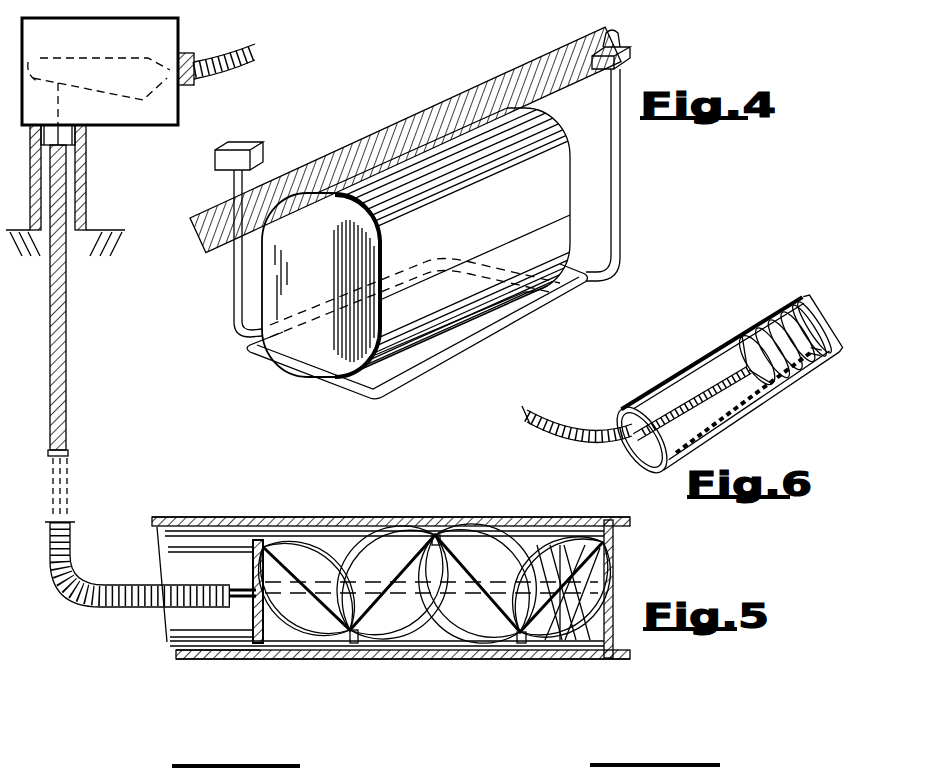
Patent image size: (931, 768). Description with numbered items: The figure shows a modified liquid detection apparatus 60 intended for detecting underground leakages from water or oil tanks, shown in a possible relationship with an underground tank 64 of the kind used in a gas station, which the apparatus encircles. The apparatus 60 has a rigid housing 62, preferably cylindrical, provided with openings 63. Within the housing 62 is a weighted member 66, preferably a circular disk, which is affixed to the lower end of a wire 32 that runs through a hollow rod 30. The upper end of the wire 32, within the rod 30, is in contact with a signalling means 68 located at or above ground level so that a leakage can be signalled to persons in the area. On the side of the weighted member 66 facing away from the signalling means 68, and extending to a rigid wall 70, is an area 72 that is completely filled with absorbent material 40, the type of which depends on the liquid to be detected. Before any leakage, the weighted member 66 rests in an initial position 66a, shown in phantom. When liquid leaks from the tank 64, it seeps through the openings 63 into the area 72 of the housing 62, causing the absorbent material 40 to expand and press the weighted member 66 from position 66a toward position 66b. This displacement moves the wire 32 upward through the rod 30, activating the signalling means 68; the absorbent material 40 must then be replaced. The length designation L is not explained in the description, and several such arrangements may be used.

In FIG. 4, the hollow rod 30 is at (66, 397).
In FIG. 6, the hollow rod 30 is at (550, 407).
In FIG. 5, the hollow rod 30 is at (160, 562).
In FIG. 6, the wire 32 is at (737, 340).
In FIG. 5, the wire 32 is at (236, 582).
In FIG. 6, the absorbent material 40 is at (803, 368).
In FIG. 5, the absorbent material 40 is at (378, 567).
In FIG. 4, the liquid detection apparatus 60 is at (479, 357).
In FIG. 6, the liquid detection apparatus 60 is at (653, 372).
In FIG. 5, the liquid detection apparatus 60 is at (404, 493).
In FIG. 4, the rigid housing 62 is at (553, 310).
In FIG. 5, the rigid housing 62 is at (284, 517).
In FIG. 6, the openings 63 is at (837, 340).
In FIG. 5, the openings 63 is at (343, 518).
In FIG. 4, the underground tank 64 is at (486, 241).
In FIG. 6, the weighted member 66 is at (750, 330).
In FIG. 5, the weighted member 66 is at (254, 546).
In FIG. 5, the initial position of weighted member 66a is at (568, 655).
In FIG. 5, the displaced position of weighted member 66b is at (256, 660).
In FIG. 4, the signalling means 68 is at (184, 17).
In FIG. 6, the rigid wall 70 is at (766, 318).
In FIG. 5, the rigid wall 70 is at (611, 580).
In FIG. 5, the area 72 is at (596, 489).
In FIG. 6, the length L is at (811, 320).